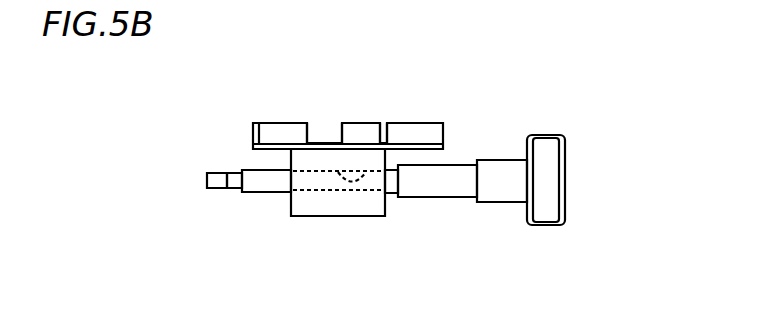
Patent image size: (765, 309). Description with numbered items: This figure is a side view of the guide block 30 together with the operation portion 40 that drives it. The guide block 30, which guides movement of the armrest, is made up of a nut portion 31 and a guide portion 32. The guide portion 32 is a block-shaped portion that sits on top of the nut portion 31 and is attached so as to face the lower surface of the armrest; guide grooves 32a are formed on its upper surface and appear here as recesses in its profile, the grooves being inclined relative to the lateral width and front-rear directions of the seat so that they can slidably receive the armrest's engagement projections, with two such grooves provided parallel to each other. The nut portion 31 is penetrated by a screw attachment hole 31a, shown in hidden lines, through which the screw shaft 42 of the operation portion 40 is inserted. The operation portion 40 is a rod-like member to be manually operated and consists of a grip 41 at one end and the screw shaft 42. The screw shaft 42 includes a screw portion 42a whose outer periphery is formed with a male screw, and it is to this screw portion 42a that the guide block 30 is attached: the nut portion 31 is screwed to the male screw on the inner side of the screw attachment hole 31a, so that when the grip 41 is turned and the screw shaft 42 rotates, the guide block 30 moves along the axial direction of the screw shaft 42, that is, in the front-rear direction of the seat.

The guide block 30 is at (362, 165).
The nut portion 31 is at (342, 218).
The screw attachment hole 31a is at (365, 172).
The guide portion 32 is at (444, 132).
The guide grooves 32a is at (260, 133).
The operation portion 40 is at (432, 165).
The grip 41 is at (565, 205).
The screw shaft 42 is at (465, 164).
The screw portion 42a is at (277, 193).